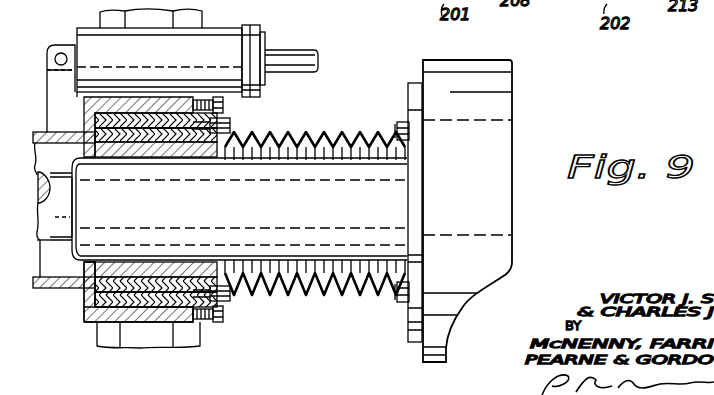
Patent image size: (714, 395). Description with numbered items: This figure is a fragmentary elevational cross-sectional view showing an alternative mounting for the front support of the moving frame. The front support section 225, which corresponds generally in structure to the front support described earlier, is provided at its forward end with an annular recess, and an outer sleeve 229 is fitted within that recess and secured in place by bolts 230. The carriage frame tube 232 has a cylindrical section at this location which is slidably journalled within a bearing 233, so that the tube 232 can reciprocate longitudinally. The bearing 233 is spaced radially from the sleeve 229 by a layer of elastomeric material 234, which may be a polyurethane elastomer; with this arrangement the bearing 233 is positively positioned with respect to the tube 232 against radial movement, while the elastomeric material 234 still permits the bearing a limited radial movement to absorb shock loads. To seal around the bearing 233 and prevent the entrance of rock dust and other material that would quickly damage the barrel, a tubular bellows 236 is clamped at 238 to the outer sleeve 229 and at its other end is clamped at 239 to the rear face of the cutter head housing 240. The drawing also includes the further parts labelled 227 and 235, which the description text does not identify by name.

The front support section 225 is at (177, 322).
The housing 227 is at (110, 303).
The outer sleeve 229 is at (230, 112).
The bolts 230 is at (227, 315).
The carriage frame tube 232 is at (297, 215).
The bearing 233 is at (175, 157).
The layer of elastomeric material 234 is at (147, 277).
The motor 235 is at (213, 37).
The tubular bellows 236 is at (337, 137).
The clamp 238 is at (230, 295).
The clamp 239 is at (400, 303).
The cutter head housing 240 is at (505, 127).